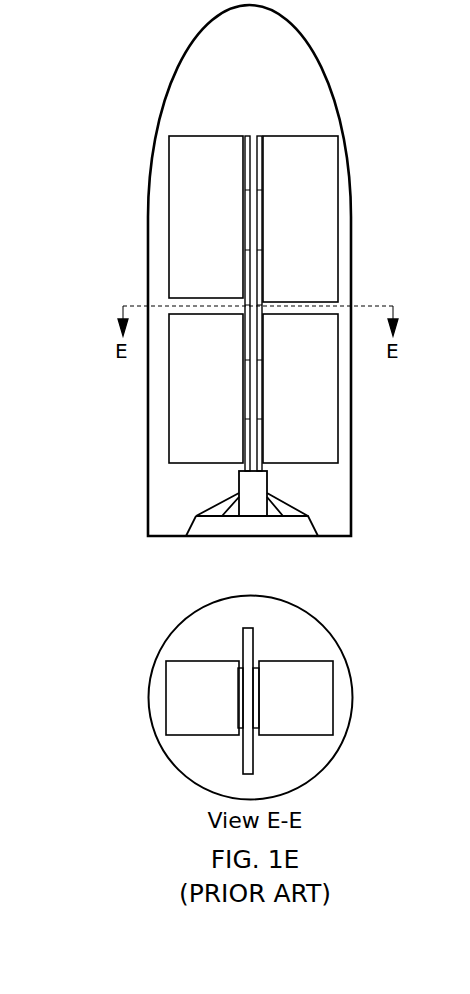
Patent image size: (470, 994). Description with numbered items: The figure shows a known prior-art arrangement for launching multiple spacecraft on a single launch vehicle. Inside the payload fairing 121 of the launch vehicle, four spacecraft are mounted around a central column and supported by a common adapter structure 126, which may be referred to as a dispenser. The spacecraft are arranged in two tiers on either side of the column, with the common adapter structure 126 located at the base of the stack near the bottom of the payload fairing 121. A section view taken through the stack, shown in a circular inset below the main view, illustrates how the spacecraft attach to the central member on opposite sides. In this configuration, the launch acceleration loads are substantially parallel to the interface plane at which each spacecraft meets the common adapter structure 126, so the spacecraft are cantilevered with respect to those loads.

The payload fairing 121 is at (322, 72).
The common adapter structure 126 is at (307, 528).